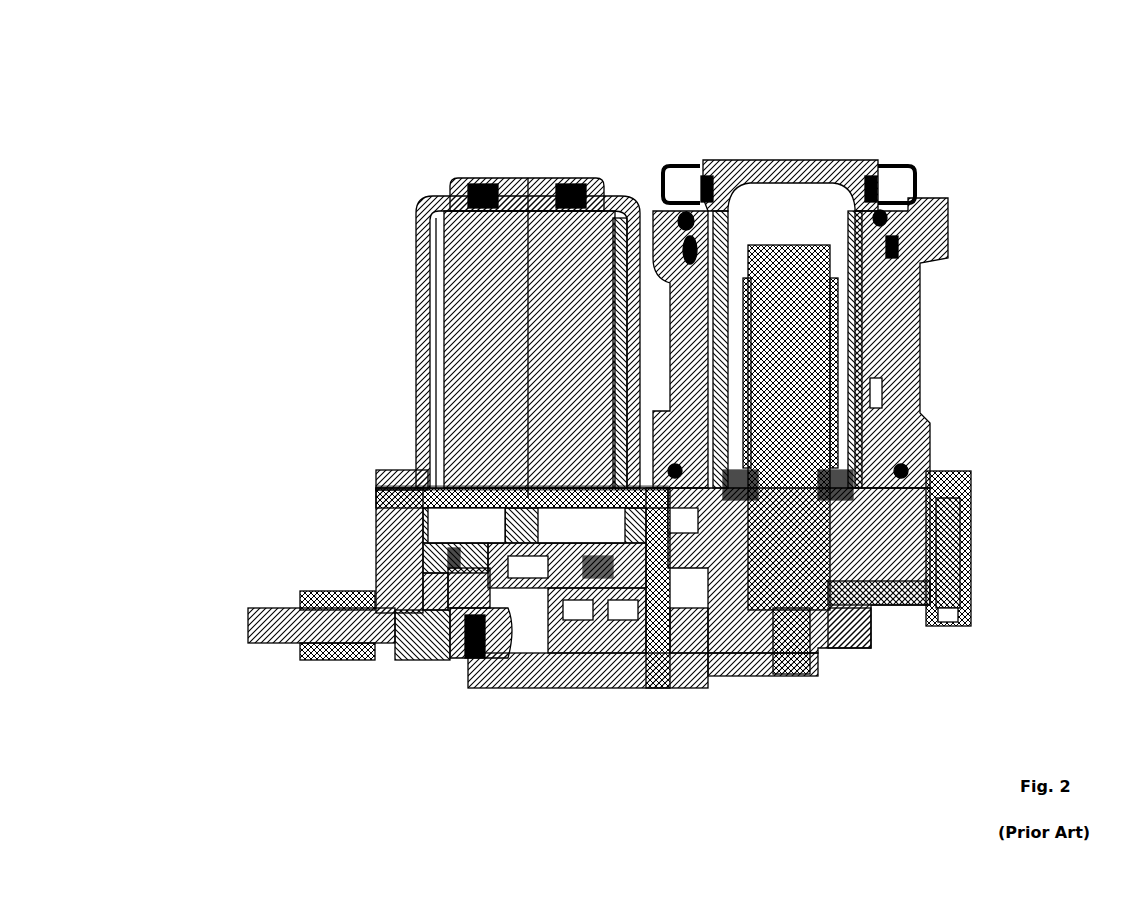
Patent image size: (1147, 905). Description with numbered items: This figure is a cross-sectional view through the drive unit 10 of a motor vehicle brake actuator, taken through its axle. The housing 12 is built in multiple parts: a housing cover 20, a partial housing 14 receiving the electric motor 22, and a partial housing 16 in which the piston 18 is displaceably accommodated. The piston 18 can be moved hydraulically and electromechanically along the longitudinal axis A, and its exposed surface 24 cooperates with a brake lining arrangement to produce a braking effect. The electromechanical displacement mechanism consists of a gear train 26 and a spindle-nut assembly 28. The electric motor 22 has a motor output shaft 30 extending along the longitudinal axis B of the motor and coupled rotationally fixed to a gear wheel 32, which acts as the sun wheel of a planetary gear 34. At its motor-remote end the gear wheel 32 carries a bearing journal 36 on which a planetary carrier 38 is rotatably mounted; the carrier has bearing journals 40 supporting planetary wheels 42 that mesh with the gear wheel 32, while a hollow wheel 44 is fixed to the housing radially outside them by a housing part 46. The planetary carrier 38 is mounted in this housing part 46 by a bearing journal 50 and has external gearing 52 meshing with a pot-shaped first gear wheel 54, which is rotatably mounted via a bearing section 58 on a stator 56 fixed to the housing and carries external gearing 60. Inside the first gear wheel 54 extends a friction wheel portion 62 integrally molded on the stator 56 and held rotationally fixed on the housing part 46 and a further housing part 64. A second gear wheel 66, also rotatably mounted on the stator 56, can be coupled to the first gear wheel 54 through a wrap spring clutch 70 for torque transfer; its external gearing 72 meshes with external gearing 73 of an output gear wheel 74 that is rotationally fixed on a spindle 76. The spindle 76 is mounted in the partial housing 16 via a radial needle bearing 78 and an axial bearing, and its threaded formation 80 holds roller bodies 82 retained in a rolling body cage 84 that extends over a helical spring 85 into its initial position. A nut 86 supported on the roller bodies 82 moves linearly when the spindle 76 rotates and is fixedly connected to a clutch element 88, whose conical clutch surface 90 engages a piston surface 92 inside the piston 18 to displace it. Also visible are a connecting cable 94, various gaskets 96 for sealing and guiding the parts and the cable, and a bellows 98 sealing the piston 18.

The drive unit 10 is at (942, 152).
The housing 12 is at (410, 640).
The partial housing 14 is at (415, 190).
The partial housing 16 is at (922, 430).
The piston 18 is at (870, 155).
The housing cover 20 is at (850, 640).
The electric motor 22 is at (522, 185).
The exposed surface 24 is at (720, 155).
The gear train 26 is at (660, 681).
The spindle-nut assembly 28 is at (920, 400).
The motor output shaft 30 is at (380, 480).
The gear wheel 32 is at (480, 681).
The planetary gear 34 is at (370, 645).
The bearing journal 36 is at (500, 665).
The planetary carrier 38 is at (510, 681).
The bearing journals 40 is at (395, 520).
The planetary wheels 42 is at (400, 555).
The hollow wheel 44 is at (400, 585).
The housing part 46 is at (745, 668).
The bearing journal 50 is at (530, 681).
The external gearing 52 is at (450, 660).
The first gear wheel 54 is at (770, 665).
The stator 56 is at (700, 680).
The bearing section 58 is at (630, 681).
The external gearing 60 is at (790, 660).
The friction wheel portion 62 is at (772, 668).
The housing part 64 is at (420, 470).
The second gear wheel 66 is at (815, 650).
The wrap spring clutch 70 is at (598, 681).
The external gearing 72 is at (598, 330).
The external gearing 73 is at (962, 575).
The output gear wheel 74 is at (880, 615).
The spindle 76 is at (962, 605).
The radial needle bearing 78 is at (962, 540).
The threaded formation 80 is at (890, 240).
The roller bodies 82 is at (908, 370).
The rolling body cage 84 is at (880, 330).
The helical spring 85 is at (908, 300).
The nut 86 is at (945, 460).
The clutch element 88 is at (940, 205).
The conical clutch surface 90 is at (696, 200).
The piston surface 92 is at (850, 165).
The connecting cable 94 is at (250, 635).
The gaskets 96 is at (475, 176).
The bellows 98 is at (903, 185).
The longitudinal axis A is at (778, 190).
The longitudinal axis of the motor B is at (517, 338).